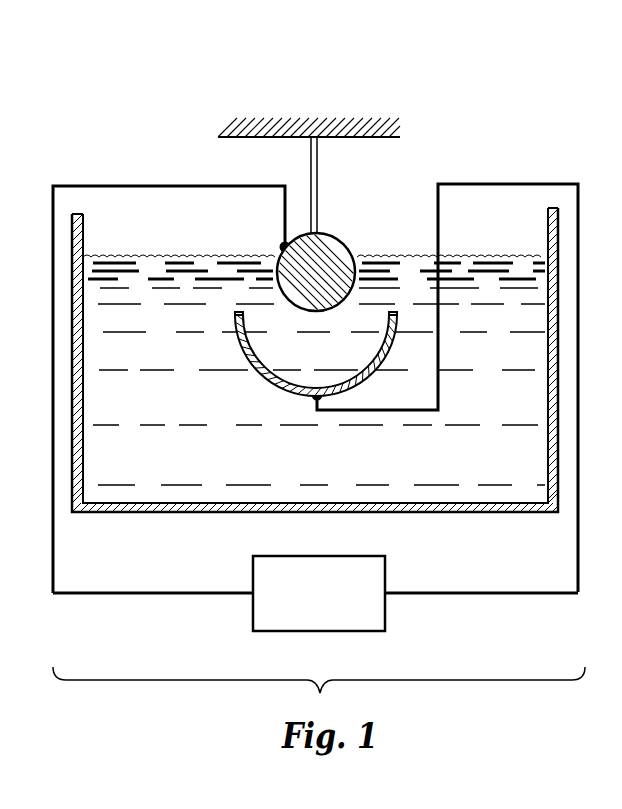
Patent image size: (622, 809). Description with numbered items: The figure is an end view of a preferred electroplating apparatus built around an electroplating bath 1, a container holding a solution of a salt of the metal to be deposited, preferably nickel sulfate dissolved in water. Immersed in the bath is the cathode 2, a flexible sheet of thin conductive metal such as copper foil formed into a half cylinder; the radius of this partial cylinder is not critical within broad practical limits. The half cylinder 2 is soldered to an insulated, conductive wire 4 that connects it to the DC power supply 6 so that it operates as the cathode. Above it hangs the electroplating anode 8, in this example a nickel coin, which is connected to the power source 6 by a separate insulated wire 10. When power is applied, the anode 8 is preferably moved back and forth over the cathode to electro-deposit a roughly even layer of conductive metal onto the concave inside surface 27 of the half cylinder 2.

The electroplating bath 1 is at (194, 158).
The insulated wire 10 is at (156, 186).
The wire 4 is at (547, 183).
The electroplating anode 8 is at (322, 245).
The cathode 2 is at (266, 378).
The concave inside surface 27 is at (247, 311).
The DC power supply 6 is at (252, 560).